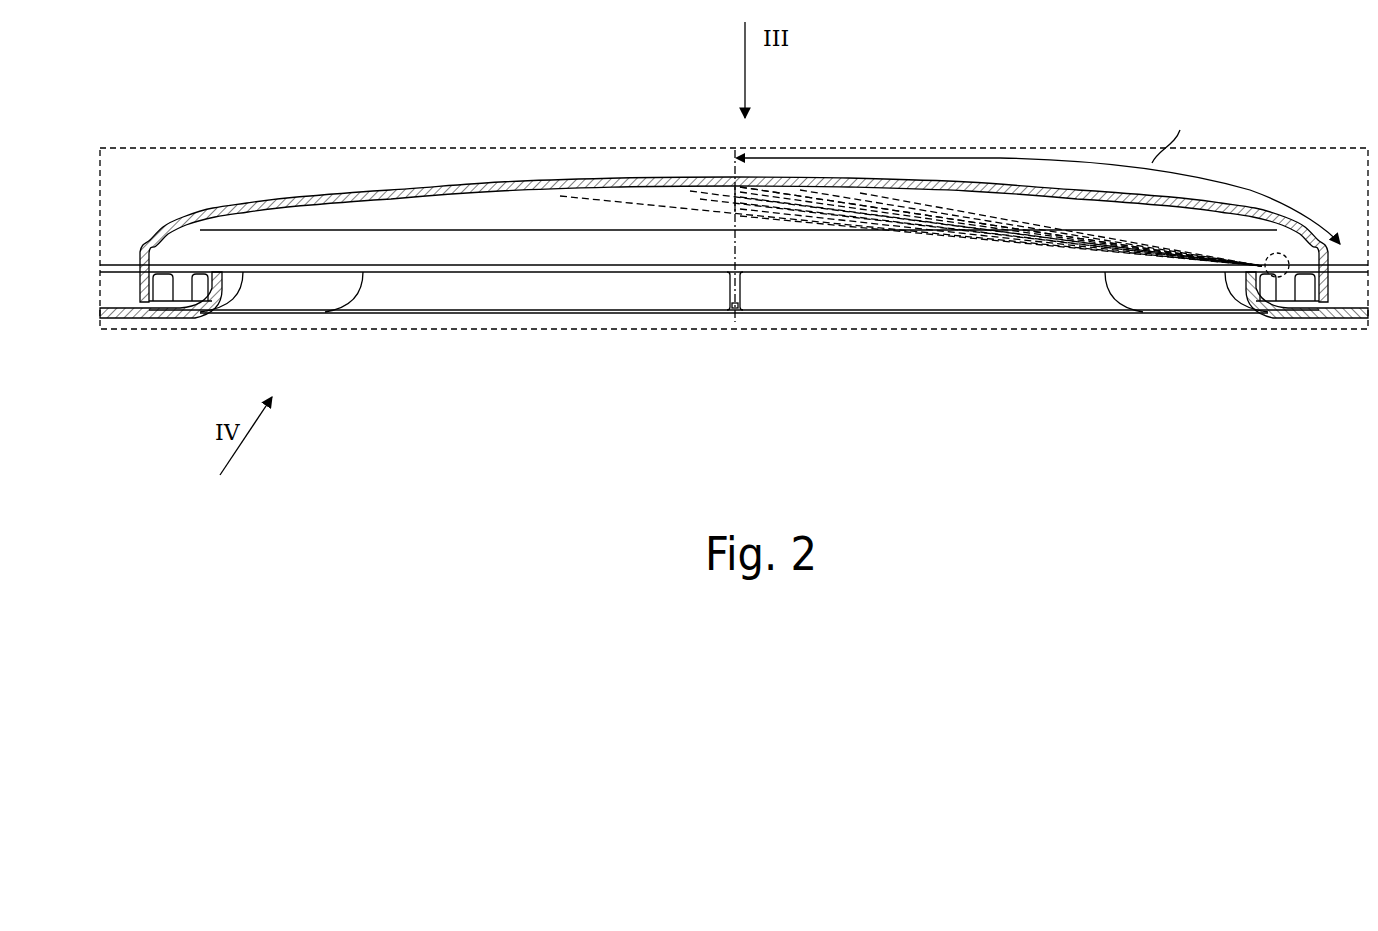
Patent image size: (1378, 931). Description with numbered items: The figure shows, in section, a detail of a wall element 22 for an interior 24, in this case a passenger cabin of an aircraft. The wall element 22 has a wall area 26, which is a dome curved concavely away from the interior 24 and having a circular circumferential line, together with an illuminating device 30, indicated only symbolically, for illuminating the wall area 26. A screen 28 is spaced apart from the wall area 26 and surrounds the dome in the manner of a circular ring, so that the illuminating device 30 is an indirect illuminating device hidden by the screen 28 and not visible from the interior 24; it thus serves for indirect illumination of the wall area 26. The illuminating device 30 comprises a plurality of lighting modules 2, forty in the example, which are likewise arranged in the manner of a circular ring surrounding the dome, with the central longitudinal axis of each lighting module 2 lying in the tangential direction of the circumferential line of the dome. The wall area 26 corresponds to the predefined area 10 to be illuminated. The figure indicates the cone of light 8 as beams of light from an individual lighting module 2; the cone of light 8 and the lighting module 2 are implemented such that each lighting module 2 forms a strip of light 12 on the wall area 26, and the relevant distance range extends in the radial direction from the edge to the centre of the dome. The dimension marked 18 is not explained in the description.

The lighting module 2 is at (1236, 317).
The cone of light 8 is at (922, 205).
The predefined area 10 is at (734, 192).
The strip of light 12 is at (798, 187).
The outer region 18 is at (1037, 170).
The wall element 22 is at (380, 124).
The interior 24 is at (748, 400).
The wall area 26 is at (490, 200).
The screen 28 is at (460, 313).
The illuminating device 30 is at (1300, 300).